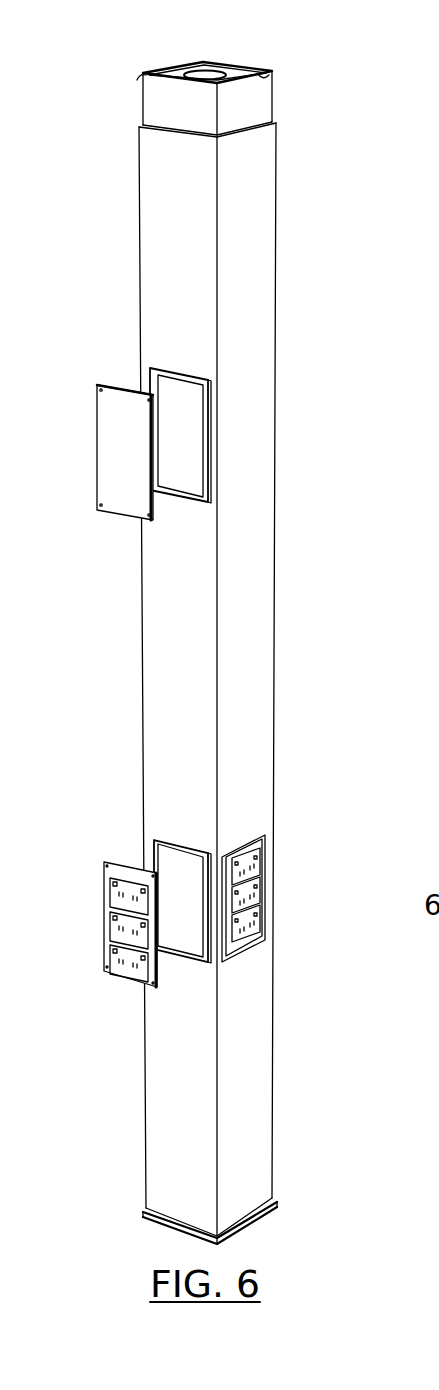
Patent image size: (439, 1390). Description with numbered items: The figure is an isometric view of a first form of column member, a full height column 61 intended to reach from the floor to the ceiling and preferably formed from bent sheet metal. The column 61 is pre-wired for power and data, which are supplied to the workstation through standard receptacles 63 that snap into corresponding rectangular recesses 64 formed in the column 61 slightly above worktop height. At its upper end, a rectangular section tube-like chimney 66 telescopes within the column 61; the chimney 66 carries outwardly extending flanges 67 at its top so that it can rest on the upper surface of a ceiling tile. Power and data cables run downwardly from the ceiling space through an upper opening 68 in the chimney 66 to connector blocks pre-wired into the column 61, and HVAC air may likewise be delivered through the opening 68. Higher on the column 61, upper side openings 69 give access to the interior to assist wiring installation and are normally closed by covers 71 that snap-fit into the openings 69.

The full height column 61 is at (296, 521).
The standard receptacles 63 is at (102, 912).
The rectangular recesses 64 is at (166, 850).
The chimney 66 is at (261, 107).
The outwardly extending flanges 67 is at (143, 76).
The upper opening 68 is at (214, 70).
The upper side openings 69 is at (193, 427).
The covers 71 is at (104, 433).